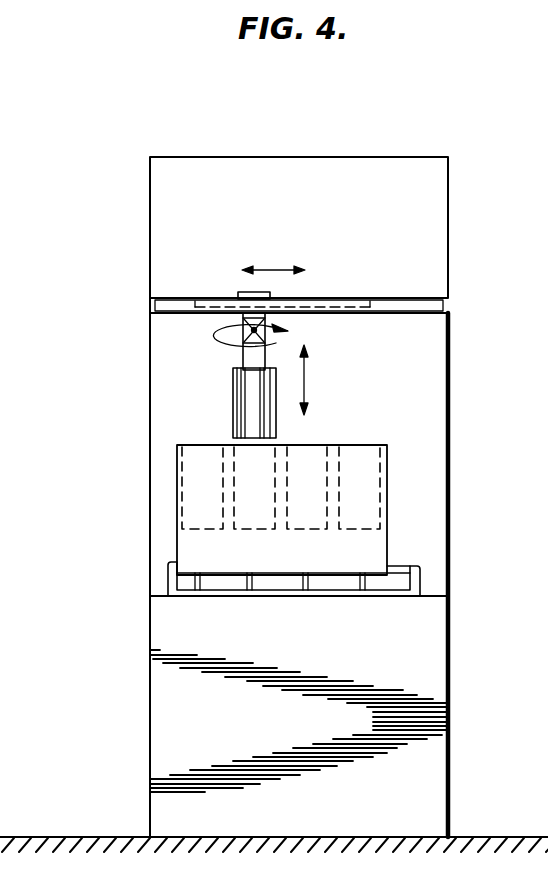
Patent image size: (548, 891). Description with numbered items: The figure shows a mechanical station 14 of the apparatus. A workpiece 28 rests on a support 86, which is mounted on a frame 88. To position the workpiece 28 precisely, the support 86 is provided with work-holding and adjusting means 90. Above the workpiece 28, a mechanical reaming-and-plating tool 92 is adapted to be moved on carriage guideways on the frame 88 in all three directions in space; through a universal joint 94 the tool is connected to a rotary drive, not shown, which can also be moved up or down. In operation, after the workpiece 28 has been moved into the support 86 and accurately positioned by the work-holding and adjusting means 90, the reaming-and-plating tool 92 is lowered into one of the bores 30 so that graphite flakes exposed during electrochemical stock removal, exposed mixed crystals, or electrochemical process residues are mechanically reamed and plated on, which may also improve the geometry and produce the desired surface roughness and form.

The mechanical station 14 is at (58, 128).
The workpiece 28 is at (377, 556).
The bores 30 is at (367, 494).
The support 86 is at (336, 596).
The frame 88 is at (449, 705).
The work-holding and adjusting means 90 is at (245, 583).
The mechanical reaming-and-plating tool 92 is at (233, 400).
The universal joint 94 is at (243, 327).